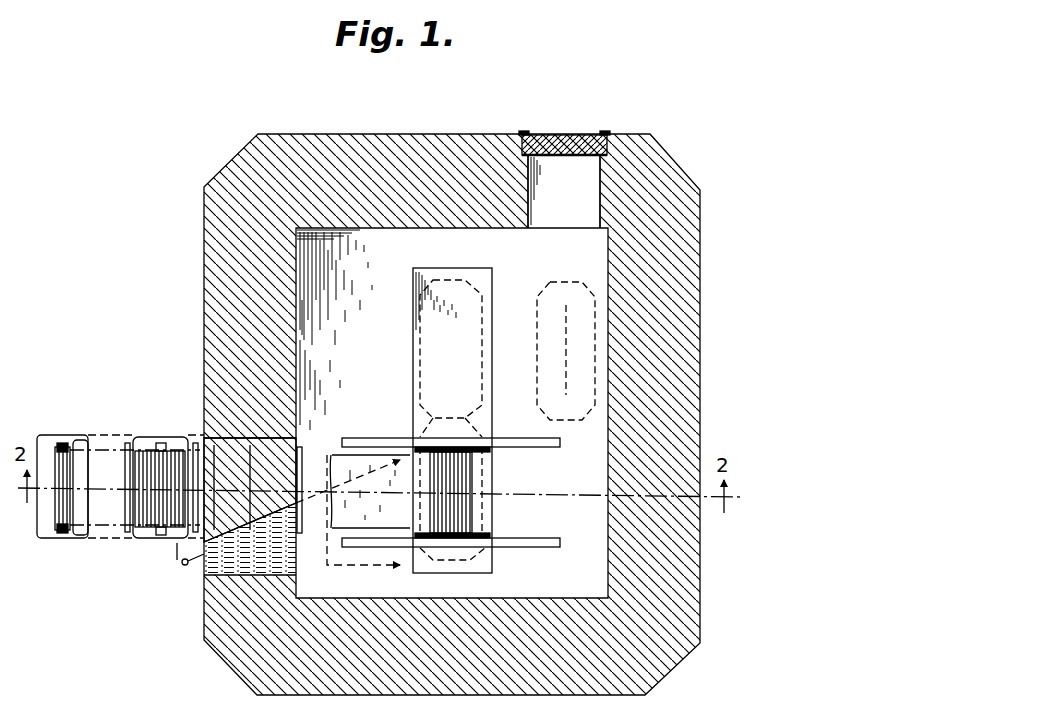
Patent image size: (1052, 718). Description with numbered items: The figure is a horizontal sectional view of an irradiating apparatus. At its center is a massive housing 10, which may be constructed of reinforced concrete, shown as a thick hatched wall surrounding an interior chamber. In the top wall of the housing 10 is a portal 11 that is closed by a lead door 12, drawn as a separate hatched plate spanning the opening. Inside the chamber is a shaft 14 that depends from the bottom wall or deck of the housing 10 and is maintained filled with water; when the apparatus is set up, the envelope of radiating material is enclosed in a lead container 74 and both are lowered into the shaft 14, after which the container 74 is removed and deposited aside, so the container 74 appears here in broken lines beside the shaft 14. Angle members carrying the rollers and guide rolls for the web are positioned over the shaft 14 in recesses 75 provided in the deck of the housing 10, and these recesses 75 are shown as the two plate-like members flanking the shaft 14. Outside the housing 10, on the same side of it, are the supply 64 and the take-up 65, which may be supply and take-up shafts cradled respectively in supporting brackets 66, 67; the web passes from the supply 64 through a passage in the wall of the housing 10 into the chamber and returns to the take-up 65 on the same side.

The housing 10 is at (204, 262).
The portal 11 is at (570, 195).
The lead door 12 is at (561, 135).
The shaft 14 is at (413, 314).
The supply 64 is at (150, 455).
The take-up 65 is at (50, 455).
The supporting bracket 66 is at (136, 540).
The supporting bracket 67 is at (40, 538).
The lead container 74 is at (566, 282).
The recesses 75 is at (537, 447).